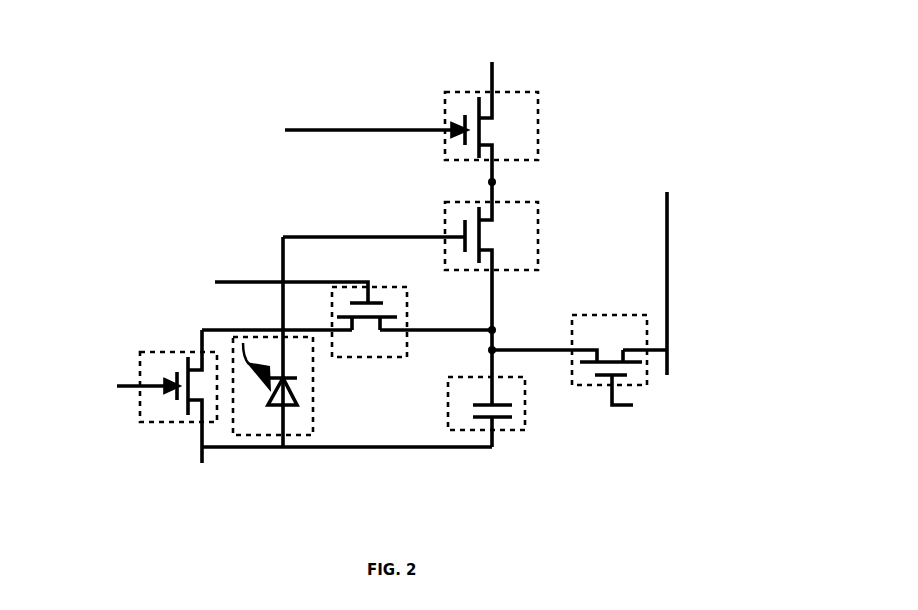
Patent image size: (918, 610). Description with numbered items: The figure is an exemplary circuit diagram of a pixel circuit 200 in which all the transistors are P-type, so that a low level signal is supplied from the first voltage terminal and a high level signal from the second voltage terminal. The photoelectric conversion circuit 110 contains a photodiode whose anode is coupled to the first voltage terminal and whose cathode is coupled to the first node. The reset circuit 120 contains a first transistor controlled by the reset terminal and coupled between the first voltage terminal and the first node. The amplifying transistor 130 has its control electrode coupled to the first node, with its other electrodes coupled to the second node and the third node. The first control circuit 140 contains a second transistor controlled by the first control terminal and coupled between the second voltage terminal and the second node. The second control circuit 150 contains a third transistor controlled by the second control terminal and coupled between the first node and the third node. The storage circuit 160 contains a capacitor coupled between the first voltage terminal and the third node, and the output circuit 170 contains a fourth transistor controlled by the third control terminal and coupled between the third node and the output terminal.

The pixel circuit 200 is at (642, 48).
The photoelectric conversion circuit 110 is at (314, 431).
The reset circuit 120 is at (144, 352).
The amplifying transistor 130 is at (530, 203).
The first control circuit 140 is at (536, 94).
The second control circuit 150 is at (408, 313).
The storage circuit 160 is at (526, 431).
The output circuit 170 is at (585, 316).